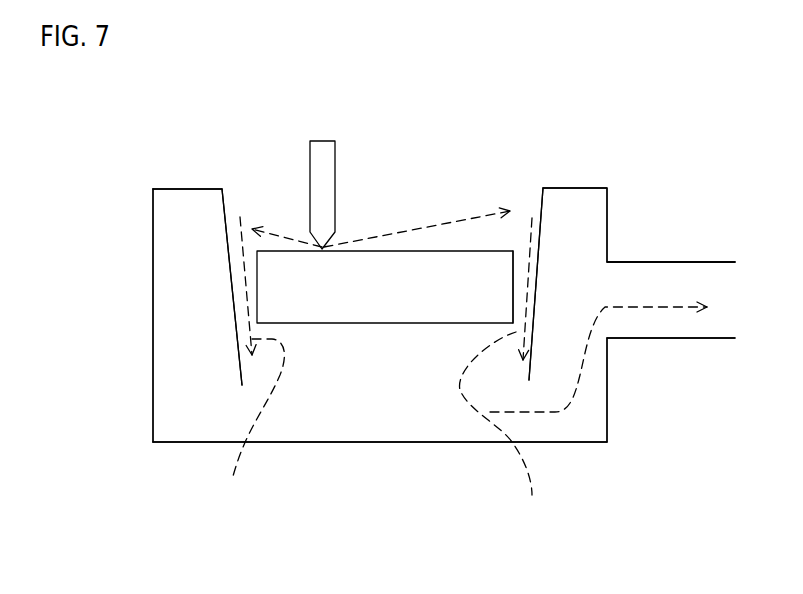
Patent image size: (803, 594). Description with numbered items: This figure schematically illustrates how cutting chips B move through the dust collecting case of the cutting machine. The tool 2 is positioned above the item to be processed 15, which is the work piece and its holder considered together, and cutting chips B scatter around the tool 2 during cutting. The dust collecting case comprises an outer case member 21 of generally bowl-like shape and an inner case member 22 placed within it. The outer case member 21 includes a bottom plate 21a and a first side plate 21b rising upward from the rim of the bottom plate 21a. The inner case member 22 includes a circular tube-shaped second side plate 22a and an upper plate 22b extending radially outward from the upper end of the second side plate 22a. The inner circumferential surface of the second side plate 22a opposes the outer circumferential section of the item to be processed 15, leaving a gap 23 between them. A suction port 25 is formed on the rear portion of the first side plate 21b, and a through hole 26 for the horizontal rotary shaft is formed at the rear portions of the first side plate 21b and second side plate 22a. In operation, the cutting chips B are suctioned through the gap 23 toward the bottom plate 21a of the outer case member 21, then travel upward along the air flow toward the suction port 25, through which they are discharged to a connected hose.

The cutting tool 2 is at (335, 177).
The item to be processed 15 is at (398, 305).
The outer case member 21 is at (153, 398).
The bottom plate 21a is at (424, 442).
The first side plate 21b is at (153, 337).
The inner case member 22 is at (225, 233).
The second side plate 22a is at (230, 284).
The upper plate 22b is at (178, 190).
The gap 23 is at (523, 270).
The suction port 25 is at (603, 283).
The through hole 26 is at (687, 262).
The cutting chips B is at (277, 228).